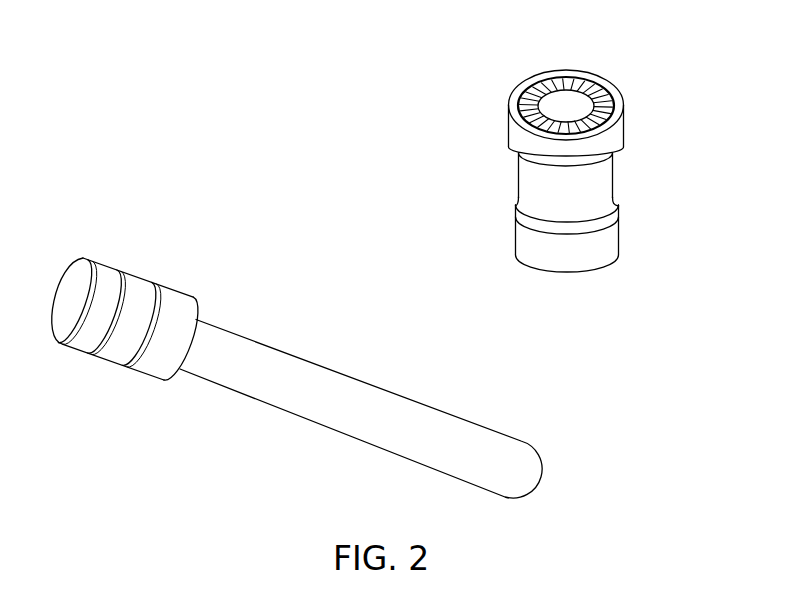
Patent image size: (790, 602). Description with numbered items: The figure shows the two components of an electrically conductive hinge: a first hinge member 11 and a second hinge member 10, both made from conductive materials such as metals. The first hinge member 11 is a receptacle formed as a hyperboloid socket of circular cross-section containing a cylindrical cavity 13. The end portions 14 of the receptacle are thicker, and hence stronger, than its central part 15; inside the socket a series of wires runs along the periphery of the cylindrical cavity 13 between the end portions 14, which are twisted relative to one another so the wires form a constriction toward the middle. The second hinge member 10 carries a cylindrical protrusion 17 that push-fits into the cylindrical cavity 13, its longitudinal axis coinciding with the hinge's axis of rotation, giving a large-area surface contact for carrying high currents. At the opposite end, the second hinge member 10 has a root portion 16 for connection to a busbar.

The second hinge member 10 is at (348, 330).
The first hinge member 11 is at (645, 66).
The cylindrical cavity 13 is at (572, 95).
The end portions 14 is at (517, 135).
The central part 15 is at (600, 182).
The root portion 16 is at (133, 285).
The protrusion 17 is at (427, 413).